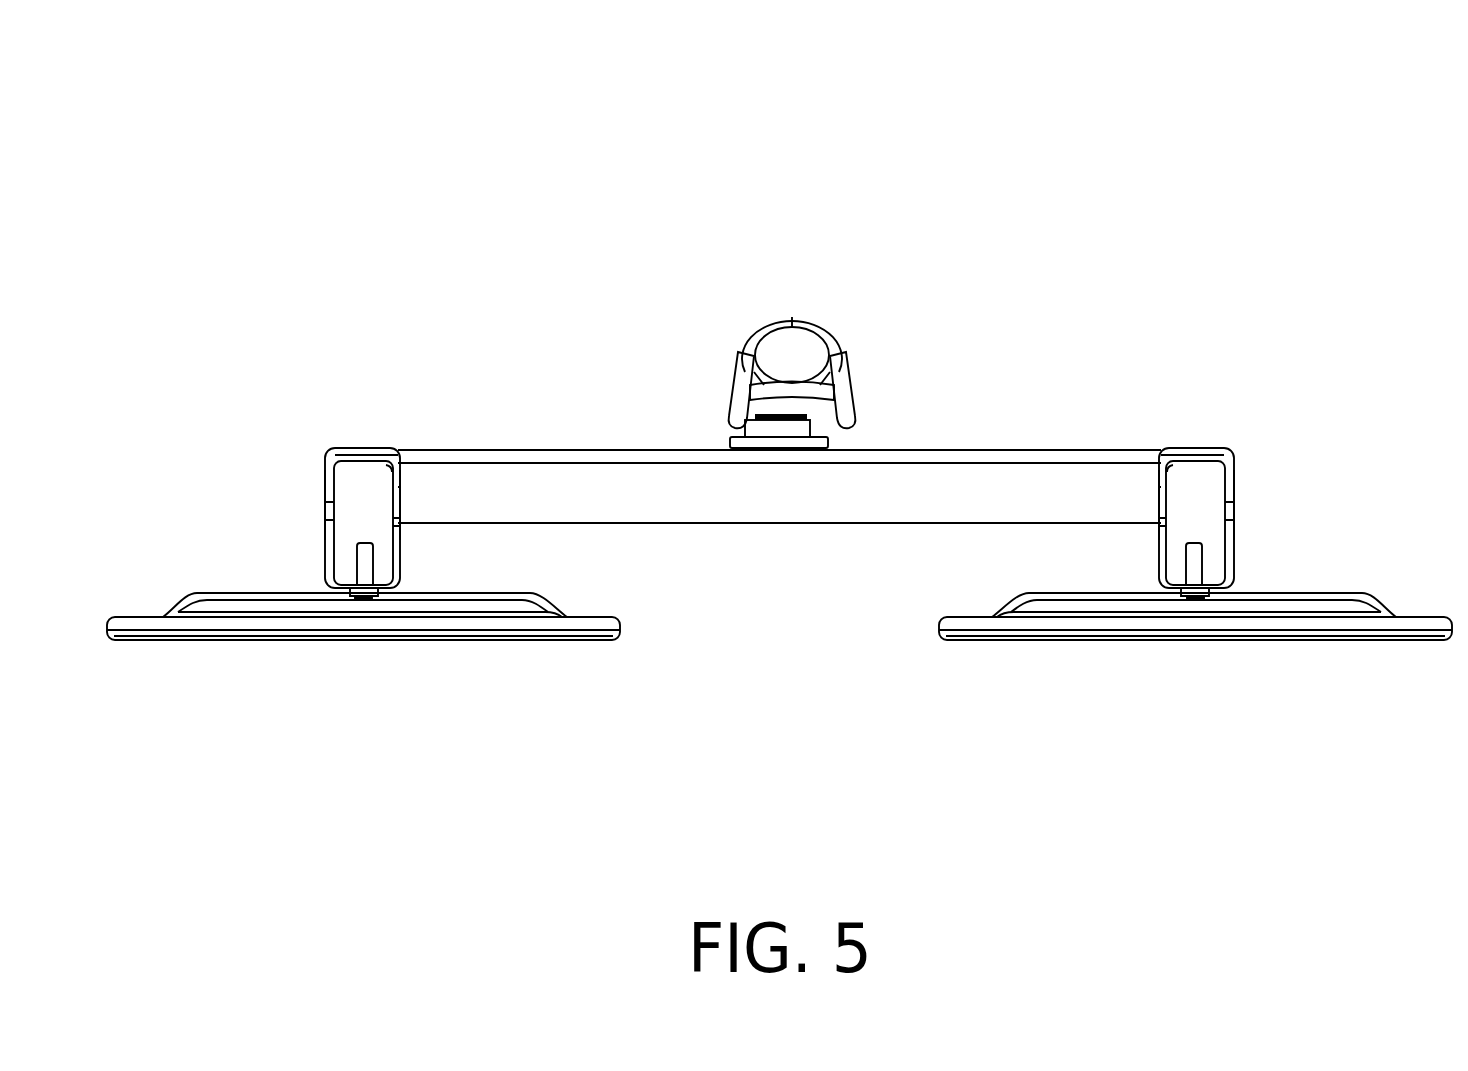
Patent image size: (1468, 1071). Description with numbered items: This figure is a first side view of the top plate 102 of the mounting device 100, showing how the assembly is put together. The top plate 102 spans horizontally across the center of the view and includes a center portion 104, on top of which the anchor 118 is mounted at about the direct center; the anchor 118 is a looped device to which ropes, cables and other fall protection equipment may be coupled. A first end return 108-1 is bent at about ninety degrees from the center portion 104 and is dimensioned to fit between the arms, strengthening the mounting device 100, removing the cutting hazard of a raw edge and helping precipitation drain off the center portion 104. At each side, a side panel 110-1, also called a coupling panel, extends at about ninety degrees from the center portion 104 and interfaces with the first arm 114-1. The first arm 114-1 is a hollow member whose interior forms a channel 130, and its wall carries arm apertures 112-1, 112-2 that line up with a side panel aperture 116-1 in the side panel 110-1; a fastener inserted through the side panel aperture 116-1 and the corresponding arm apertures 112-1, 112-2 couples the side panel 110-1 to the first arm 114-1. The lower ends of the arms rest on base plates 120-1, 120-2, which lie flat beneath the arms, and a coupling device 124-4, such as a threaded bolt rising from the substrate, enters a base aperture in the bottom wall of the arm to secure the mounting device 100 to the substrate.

The mounting device 100 is at (158, 104).
The top plate 102 is at (349, 450).
The center portion 104 is at (541, 450).
The end return 108-1 is at (778, 503).
The side panel 110-1 is at (325, 487).
The arm aperture 112-1 is at (345, 506).
The arm aperture 112-2 is at (408, 522).
The first arm 114-1 is at (333, 563).
The side panel aperture 116-1 is at (316, 505).
The anchor 118 is at (818, 326).
The base plate 120-1 is at (197, 605).
The base plate 120-2 is at (1195, 686).
The coupling device 124-4 is at (365, 578).
The channel 130 is at (382, 487).